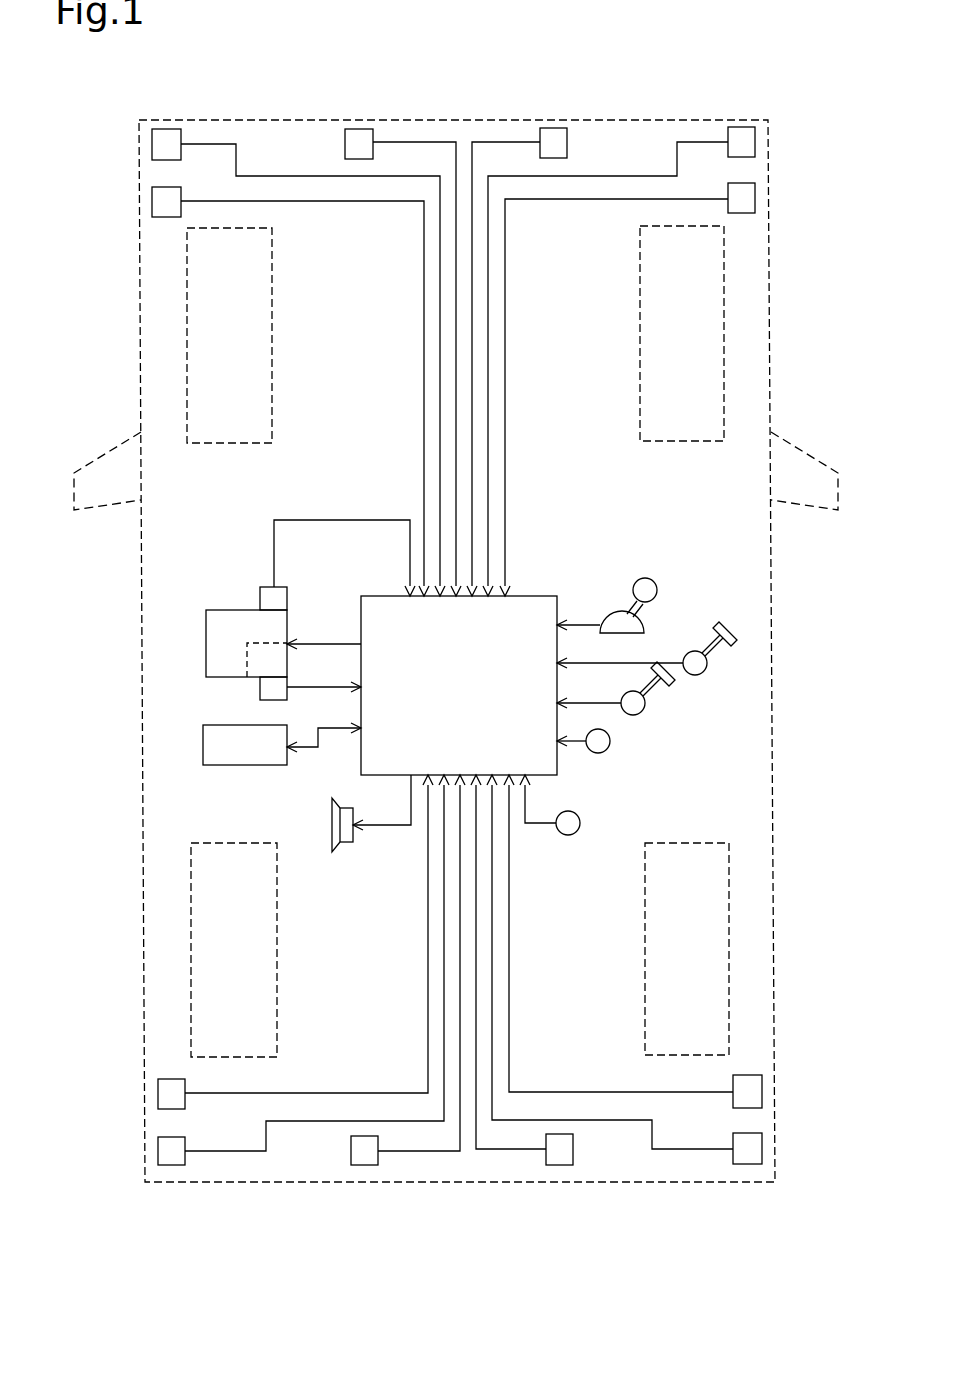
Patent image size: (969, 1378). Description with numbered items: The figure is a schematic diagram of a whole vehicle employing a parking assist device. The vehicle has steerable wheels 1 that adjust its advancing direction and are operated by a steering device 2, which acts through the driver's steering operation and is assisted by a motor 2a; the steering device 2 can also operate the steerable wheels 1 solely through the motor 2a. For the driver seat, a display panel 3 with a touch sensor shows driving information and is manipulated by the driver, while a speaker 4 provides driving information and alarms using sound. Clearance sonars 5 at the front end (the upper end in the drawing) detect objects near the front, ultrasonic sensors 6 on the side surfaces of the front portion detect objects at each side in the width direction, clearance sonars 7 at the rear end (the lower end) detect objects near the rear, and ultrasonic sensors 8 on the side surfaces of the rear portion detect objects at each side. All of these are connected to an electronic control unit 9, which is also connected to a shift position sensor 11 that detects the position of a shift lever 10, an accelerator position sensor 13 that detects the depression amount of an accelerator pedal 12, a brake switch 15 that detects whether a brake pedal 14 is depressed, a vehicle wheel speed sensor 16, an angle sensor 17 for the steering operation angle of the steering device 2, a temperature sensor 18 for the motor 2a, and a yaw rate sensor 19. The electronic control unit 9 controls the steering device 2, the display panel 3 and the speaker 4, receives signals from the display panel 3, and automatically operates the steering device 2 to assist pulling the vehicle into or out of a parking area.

The steerable wheels 1 is at (272, 240).
The steering device 2 is at (218, 610).
The motor 2a is at (289, 660).
The display panel 3 is at (203, 746).
The speaker 4 is at (332, 826).
The clearance sonars 5 is at (167, 129).
The ultrasonic sensors 6 is at (152, 202).
The clearance sonars 7 is at (172, 1165).
The ultrasonic sensors 8 is at (158, 1093).
The electronic control unit 9 is at (361, 596).
The shift lever 10 is at (646, 578).
The shift position sensor 11 is at (612, 614).
The accelerator pedal 12 is at (730, 630).
The accelerator position sensor 13 is at (686, 653).
The brake pedal 14 is at (676, 690).
The brake switch 15 is at (644, 712).
The vehicle wheel speed sensor 16 is at (610, 746).
The angle sensor 17 is at (267, 587).
The temperature sensor 18 is at (264, 700).
The yaw rate sensor 19 is at (581, 823).